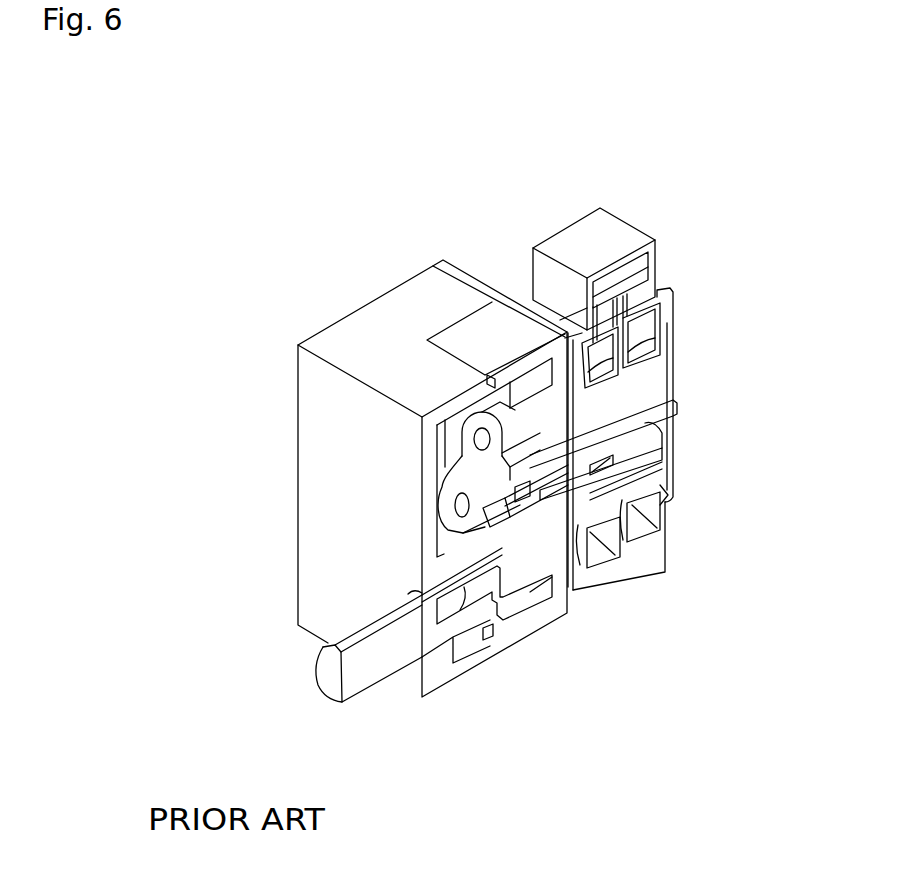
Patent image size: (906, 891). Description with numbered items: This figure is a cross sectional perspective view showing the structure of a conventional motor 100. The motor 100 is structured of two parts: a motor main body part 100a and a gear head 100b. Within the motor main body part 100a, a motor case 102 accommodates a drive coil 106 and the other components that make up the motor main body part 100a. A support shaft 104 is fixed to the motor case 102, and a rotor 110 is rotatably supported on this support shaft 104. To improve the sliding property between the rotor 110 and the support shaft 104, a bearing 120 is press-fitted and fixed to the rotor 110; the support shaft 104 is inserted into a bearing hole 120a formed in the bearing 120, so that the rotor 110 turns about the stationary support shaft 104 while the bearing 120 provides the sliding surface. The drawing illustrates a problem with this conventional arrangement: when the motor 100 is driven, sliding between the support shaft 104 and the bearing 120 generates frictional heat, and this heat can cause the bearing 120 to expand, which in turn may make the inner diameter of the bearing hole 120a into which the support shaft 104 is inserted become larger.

The motor 100 is at (161, 153).
The motor main body part 100a is at (530, 218).
The gear head 100b is at (272, 387).
The motor case 102 is at (676, 478).
The support shaft 104 is at (678, 410).
The drive coil 106 is at (608, 543).
The rotor 110 is at (668, 495).
The bearing 120 is at (678, 401).
The bearing hole 120a is at (667, 423).